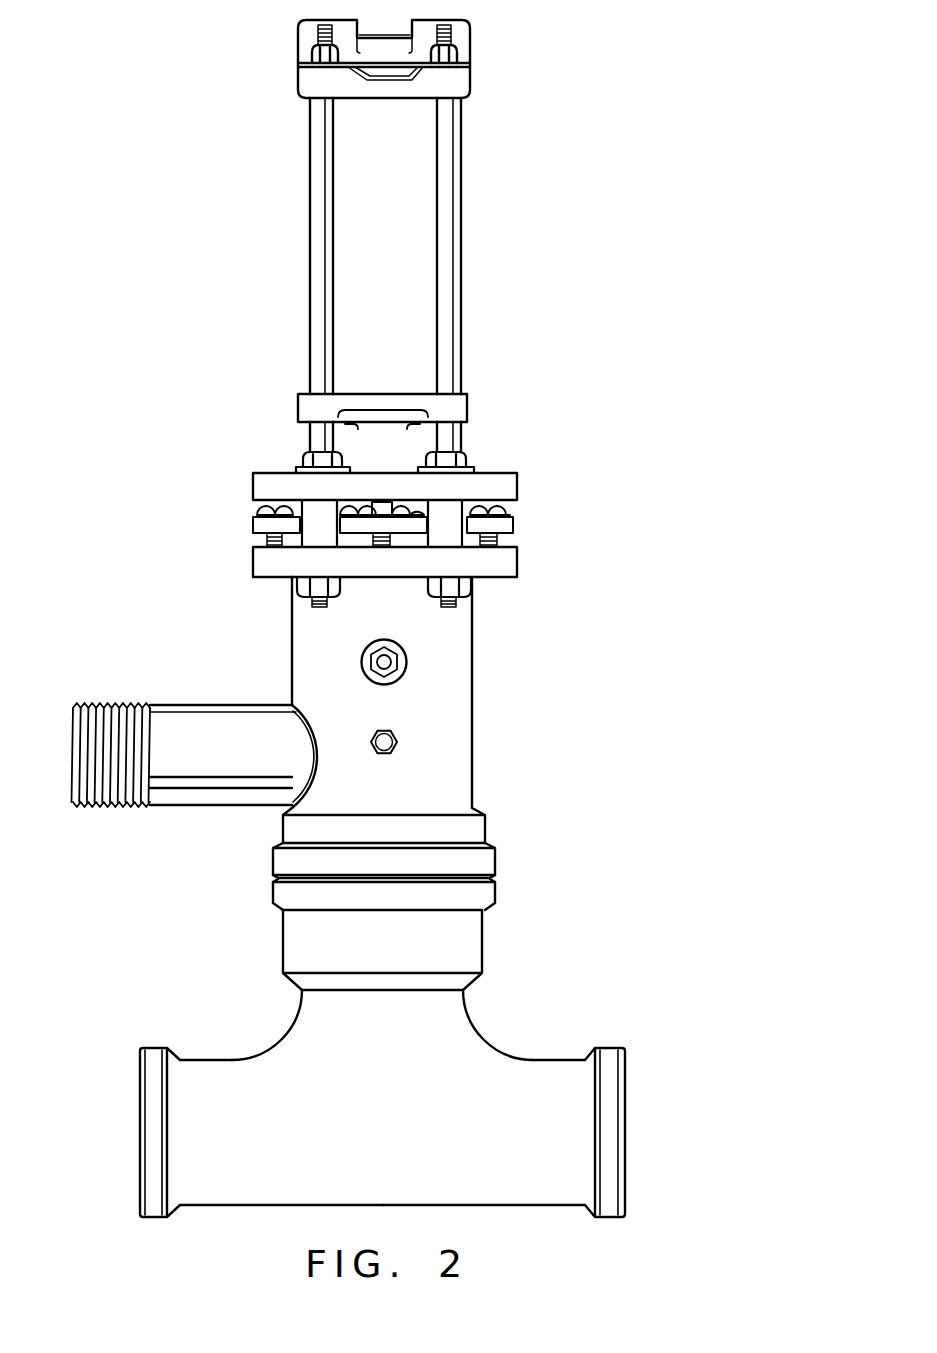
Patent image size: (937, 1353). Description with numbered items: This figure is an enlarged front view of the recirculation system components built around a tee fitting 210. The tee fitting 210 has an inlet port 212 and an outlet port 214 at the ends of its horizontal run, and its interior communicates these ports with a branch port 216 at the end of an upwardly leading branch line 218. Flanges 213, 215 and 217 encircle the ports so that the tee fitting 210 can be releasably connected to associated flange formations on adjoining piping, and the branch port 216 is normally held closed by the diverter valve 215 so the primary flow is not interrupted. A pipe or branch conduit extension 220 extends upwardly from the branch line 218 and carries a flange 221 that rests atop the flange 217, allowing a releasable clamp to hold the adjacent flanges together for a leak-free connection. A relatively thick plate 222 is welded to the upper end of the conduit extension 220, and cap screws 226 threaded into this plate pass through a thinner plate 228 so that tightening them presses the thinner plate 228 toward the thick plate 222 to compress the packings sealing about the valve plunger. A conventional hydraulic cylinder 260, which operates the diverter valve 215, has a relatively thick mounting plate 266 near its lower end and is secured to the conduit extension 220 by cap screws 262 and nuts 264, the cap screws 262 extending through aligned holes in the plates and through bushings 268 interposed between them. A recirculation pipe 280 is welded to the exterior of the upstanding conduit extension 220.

The tee fitting 210 is at (403, 1113).
The inlet port 212 is at (198, 1205).
The flange 213 is at (157, 1048).
The outlet port 214 is at (540, 1205).
The diverter valve 215 is at (567, 714).
The branch port 216 is at (470, 937).
The flange 217 is at (496, 884).
The branch line 218 is at (288, 942).
The branch conduit extension 220 is at (474, 656).
The flange 221 is at (273, 858).
The thick plate 222 is at (519, 563).
The cap screws 226 is at (262, 508).
The thinner plate 228 is at (515, 530).
The hydraulic cylinder 260 is at (487, 337).
The cap screws 262 is at (302, 455).
The nuts 264 is at (298, 590).
The mounting plate 266 is at (387, 478).
The bushings 268 is at (320, 515).
The recirculation pipe 280 is at (223, 722).